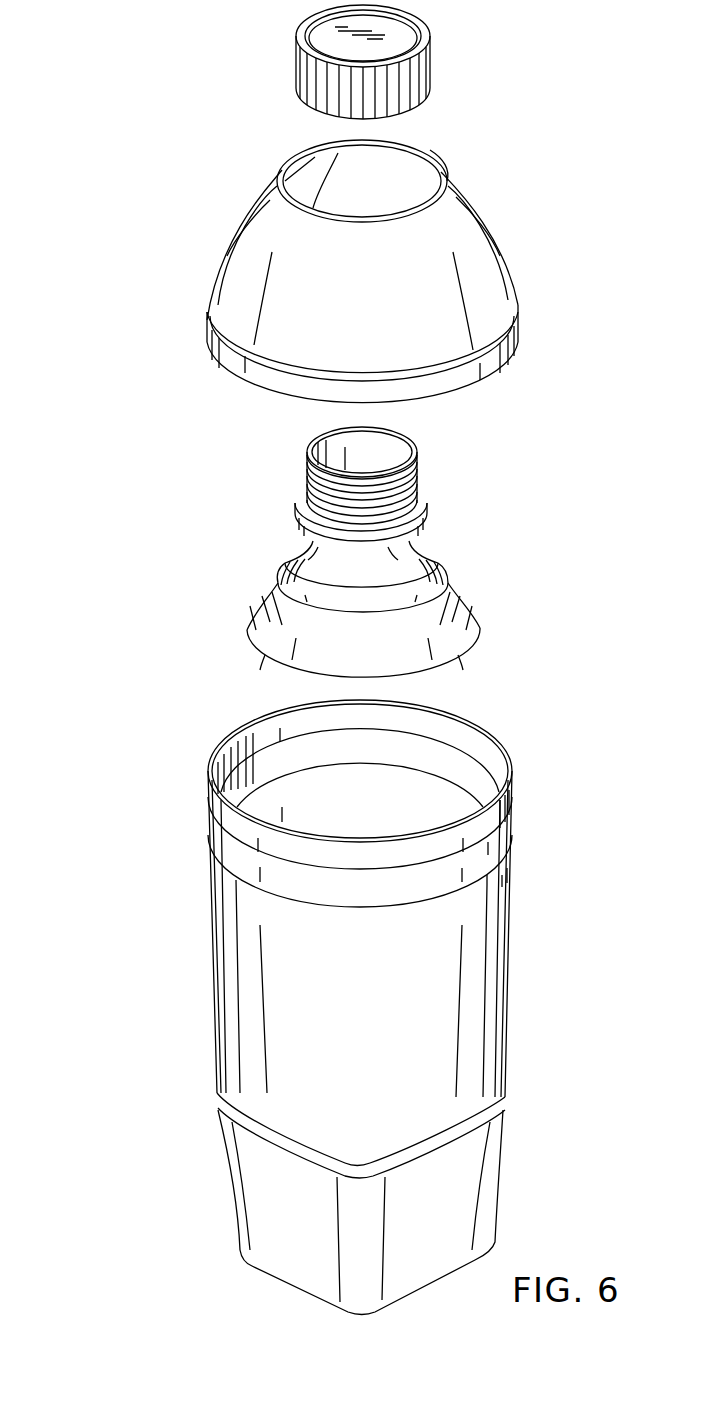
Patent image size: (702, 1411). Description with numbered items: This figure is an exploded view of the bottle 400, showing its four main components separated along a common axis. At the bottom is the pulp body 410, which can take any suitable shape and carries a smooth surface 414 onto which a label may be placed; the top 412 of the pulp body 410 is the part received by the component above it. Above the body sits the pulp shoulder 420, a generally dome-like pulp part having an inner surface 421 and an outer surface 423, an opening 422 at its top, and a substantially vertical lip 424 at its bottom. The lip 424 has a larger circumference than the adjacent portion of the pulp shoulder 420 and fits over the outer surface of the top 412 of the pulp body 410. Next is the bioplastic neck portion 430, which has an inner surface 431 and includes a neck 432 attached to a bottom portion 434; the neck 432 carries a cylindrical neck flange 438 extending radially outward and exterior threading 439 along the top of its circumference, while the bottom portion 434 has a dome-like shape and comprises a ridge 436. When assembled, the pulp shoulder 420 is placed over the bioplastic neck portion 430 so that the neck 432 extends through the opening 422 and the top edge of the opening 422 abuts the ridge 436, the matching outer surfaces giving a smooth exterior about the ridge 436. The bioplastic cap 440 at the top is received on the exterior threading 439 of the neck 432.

The bottle 400 is at (80, 55).
The pulp body 410 is at (200, 722).
The top of the pulp body 412 is at (513, 778).
The smooth surface 414 is at (513, 933).
The pulp shoulder 420 is at (522, 258).
The inner surface 421 is at (306, 164).
The opening 422 is at (253, 184).
The outer surface 423 is at (222, 257).
The lip 424 is at (200, 322).
The bioplastic neck portion 430 is at (234, 622).
The inner surface 431 is at (296, 567).
The neck 432 is at (418, 473).
The bottom portion 434 is at (440, 553).
The ridge 436 is at (446, 176).
The neck flange 438 is at (297, 512).
The exterior threading 439 is at (392, 446).
The bioplastic cap 440 is at (288, 64).